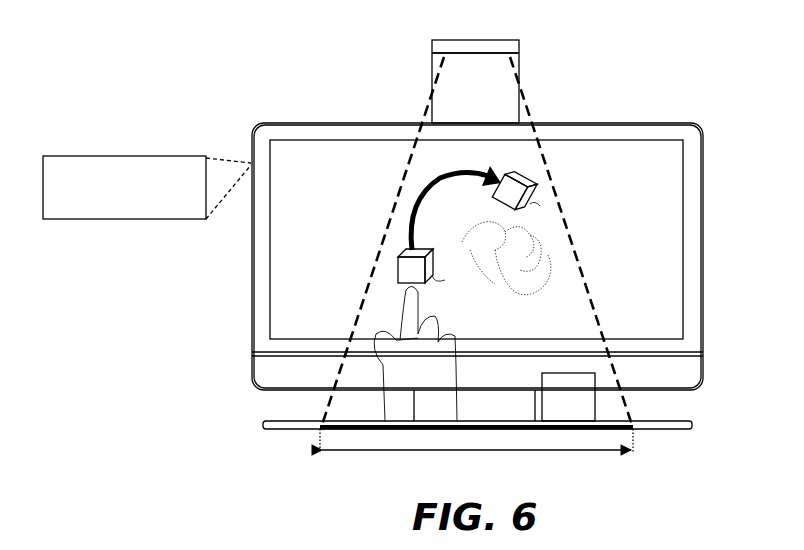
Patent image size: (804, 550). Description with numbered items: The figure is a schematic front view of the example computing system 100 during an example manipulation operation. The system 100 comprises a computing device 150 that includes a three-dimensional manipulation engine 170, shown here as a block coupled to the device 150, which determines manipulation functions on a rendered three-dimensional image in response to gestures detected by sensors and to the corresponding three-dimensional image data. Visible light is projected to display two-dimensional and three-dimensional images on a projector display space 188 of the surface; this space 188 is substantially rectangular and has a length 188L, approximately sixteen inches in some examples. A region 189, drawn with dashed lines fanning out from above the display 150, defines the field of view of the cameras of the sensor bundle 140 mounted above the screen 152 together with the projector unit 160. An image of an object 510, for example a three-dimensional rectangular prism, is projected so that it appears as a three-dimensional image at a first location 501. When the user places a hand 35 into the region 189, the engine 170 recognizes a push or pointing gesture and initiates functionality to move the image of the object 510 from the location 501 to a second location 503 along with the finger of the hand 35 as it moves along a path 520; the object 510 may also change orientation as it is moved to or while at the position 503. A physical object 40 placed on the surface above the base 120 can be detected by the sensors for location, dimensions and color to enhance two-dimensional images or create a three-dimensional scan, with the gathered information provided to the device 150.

The computing system 100 is at (636, 77).
The base 120 is at (262, 419).
The sensor bundle 140 is at (525, 86).
The computing device 150 is at (708, 173).
The display screen 152 is at (476, 239).
The projector unit 160 is at (521, 36).
The 3D manipulation engine 170 is at (126, 221).
The projector display space 188 is at (356, 417).
The length 188L is at (476, 455).
The region 189 is at (430, 100).
The object 40 is at (580, 371).
The hand 35 is at (468, 368).
The first location 501 is at (441, 279).
The location 503 is at (540, 210).
The object 510 is at (426, 252).
The path 520 is at (452, 176).